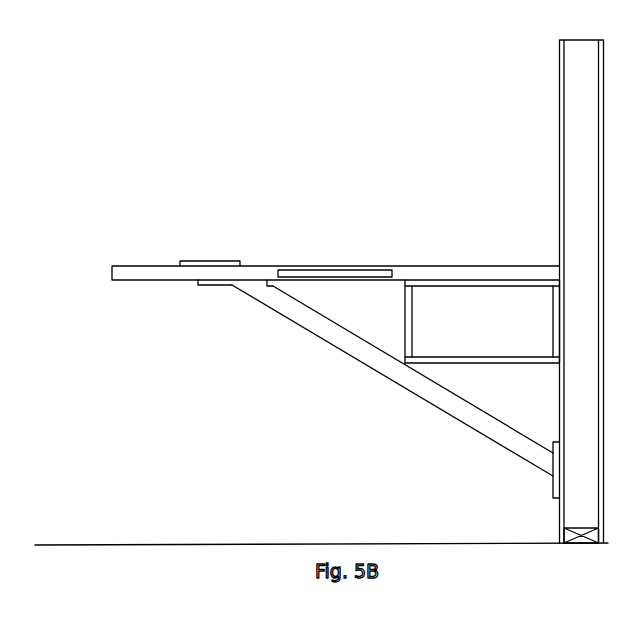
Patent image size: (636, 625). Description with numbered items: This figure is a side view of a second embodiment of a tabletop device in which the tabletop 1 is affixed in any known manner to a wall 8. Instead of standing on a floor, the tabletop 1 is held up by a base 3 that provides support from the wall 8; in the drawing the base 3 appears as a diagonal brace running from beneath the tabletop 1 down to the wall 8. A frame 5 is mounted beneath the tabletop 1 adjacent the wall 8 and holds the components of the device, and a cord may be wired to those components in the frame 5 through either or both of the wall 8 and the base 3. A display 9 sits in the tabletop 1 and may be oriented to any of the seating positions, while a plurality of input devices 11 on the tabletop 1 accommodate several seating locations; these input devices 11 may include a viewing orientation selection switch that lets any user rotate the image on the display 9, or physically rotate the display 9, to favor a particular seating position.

The tabletop 1 is at (139, 257).
The base 3 is at (447, 421).
The frame 5 is at (486, 305).
The wall 8 is at (557, 104).
The display 9 is at (319, 257).
The input devices 11 is at (208, 249).